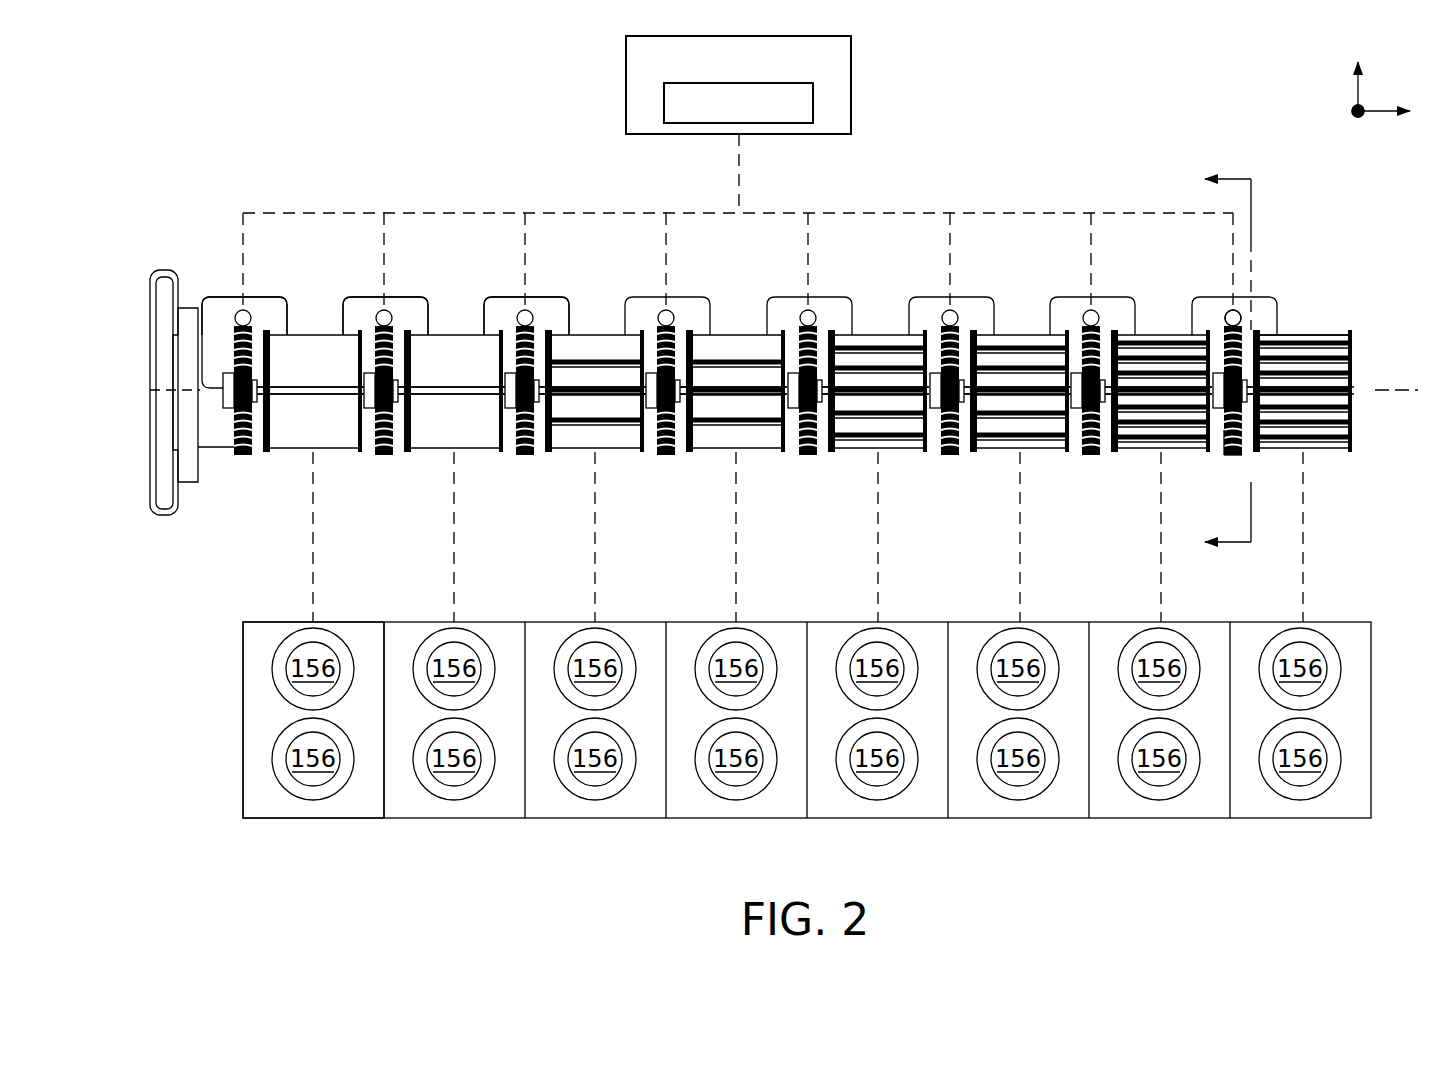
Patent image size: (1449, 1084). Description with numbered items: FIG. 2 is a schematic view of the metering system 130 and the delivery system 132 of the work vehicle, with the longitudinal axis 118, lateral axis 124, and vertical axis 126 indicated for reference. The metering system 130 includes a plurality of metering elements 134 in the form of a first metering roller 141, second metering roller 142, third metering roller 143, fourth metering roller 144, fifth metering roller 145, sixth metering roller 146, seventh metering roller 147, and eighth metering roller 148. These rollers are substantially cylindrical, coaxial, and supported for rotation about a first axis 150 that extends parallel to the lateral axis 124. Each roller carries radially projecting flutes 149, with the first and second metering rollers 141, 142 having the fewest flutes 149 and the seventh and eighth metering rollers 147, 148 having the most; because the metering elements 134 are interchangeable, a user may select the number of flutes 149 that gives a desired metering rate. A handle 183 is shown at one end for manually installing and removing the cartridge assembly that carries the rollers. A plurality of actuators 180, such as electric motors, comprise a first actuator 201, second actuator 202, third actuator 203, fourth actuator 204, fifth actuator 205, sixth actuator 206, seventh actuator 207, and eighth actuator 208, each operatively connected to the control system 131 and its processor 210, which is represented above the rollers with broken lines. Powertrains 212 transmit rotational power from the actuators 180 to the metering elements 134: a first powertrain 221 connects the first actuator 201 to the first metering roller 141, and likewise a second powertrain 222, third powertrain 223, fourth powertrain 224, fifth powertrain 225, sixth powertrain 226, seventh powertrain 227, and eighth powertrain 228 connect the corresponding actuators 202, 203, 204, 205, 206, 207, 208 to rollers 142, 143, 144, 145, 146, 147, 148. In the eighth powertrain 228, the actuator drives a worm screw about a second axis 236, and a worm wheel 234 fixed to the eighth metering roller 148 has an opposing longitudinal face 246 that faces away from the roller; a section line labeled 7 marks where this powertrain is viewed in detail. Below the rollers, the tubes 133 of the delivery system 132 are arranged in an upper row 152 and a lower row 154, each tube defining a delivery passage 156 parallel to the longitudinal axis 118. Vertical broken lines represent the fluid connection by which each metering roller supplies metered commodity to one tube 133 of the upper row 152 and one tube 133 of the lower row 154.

The control system 131 is at (598, 80).
The processor 210 is at (814, 100).
The lateral axis 124 is at (1378, 112).
The vertical axis 126 is at (1356, 108).
The longitudinal axis 118 is at (1356, 118).
The metering system 130 is at (196, 292).
The handle 183 is at (156, 278).
The delivery system 132 is at (128, 332).
The powertrains 212 is at (222, 296).
The first powertrain 221 is at (287, 297).
The second powertrain 222 is at (428, 297).
The third powertrain 223 is at (569, 297).
The fourth powertrain 224 is at (710, 297).
The fifth powertrain 225 is at (852, 297).
The sixth powertrain 226 is at (994, 297).
The seventh powertrain 227 is at (1135, 297).
The eighth powertrain 228 is at (1252, 313).
The first actuator 201 is at (255, 312).
The second actuator 202 is at (394, 316).
The third actuator 203 is at (535, 316).
The fourth actuator 204 is at (676, 316).
The fifth actuator 205 is at (818, 316).
The sixth actuator 206 is at (960, 316).
The seventh actuator 207 is at (1101, 316).
The eighth actuator 208 is at (1247, 305).
The first metering roller 141 is at (317, 335).
The second metering roller 142 is at (458, 335).
The third metering roller 143 is at (599, 335).
The fourth metering roller 144 is at (740, 335).
The fifth metering roller 145 is at (882, 335).
The sixth metering roller 146 is at (1024, 335).
The seventh metering roller 147 is at (1166, 335).
The eighth metering roller 148 is at (1308, 335).
The flutes 149 is at (285, 388).
The actuators 180 is at (1342, 313).
The first axis 150 is at (1404, 397).
The metering elements 134 is at (279, 457).
The section line 7 is at (1221, 344).
The second axis 236 is at (1228, 320).
The worm wheel 234 is at (1232, 457).
The opposing longitudinal face 246 is at (1225, 437).
The upper row 152 is at (266, 650).
The lower row 154 is at (266, 732).
The tubes 133 is at (277, 800).
The delivery passage 156 is at (806, 714).